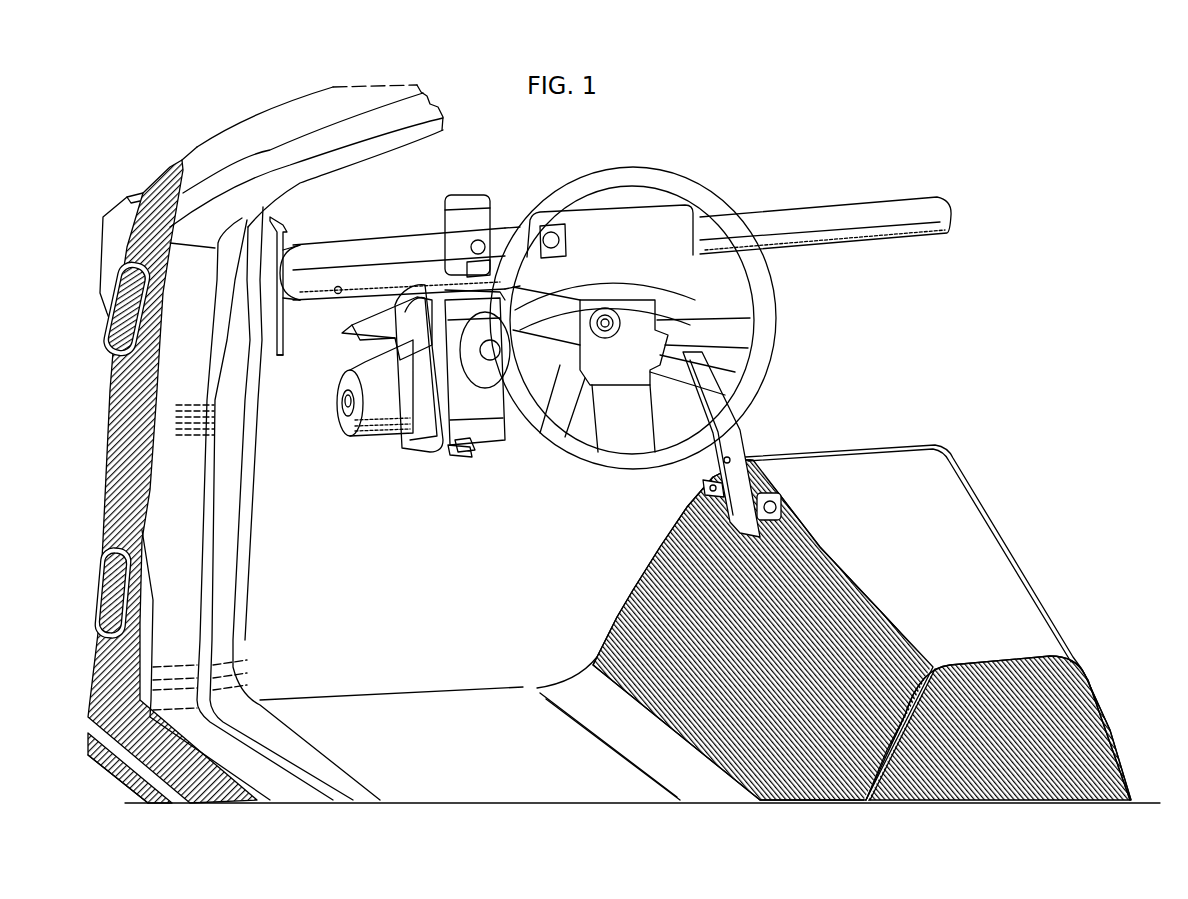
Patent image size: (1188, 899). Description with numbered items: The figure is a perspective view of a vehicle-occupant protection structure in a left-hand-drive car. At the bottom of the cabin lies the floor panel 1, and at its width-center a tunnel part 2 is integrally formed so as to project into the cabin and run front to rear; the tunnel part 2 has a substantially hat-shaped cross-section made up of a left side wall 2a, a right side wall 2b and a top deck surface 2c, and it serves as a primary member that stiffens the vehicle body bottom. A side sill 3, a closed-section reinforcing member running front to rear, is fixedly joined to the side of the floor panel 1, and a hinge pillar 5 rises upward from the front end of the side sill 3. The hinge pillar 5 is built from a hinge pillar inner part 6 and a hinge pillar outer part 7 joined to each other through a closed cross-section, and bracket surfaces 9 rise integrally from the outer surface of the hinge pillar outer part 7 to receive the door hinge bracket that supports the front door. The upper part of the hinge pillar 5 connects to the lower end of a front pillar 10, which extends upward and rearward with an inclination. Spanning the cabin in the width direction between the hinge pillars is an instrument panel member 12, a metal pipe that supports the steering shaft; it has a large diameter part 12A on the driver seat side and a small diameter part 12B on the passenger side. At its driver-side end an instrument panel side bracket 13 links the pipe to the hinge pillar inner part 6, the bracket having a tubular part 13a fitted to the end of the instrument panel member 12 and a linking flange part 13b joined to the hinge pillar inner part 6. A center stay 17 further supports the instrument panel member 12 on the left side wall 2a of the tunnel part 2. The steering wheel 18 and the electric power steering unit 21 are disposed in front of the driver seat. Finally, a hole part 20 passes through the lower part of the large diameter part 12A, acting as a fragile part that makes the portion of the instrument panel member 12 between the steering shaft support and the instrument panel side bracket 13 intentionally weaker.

The floor panel 1 is at (431, 700).
The tunnel part 2 is at (972, 489).
The left side wall 2a is at (884, 750).
The right side wall 2b is at (1123, 775).
The top deck surface 2c is at (928, 561).
The side sill 3 is at (360, 774).
The hinge pillar 5 is at (106, 462).
The hinge pillar inner part 6 is at (238, 474).
The hinge pillar outer part 7 is at (108, 392).
The bracket surface 9 is at (116, 328).
The front pillar 10 is at (280, 117).
The instrument panel member 12 is at (815, 207).
The large diameter part 12A is at (372, 233).
The small diameter part 12B is at (888, 242).
The instrument panel side bracket 13 is at (282, 327).
The tubular part 13a is at (307, 300).
The linking flange part 13b is at (281, 352).
The center stay 17 is at (737, 434).
The steering wheel 18 is at (637, 167).
The hole part 20 is at (338, 284).
The electric power steering unit 21 is at (382, 443).